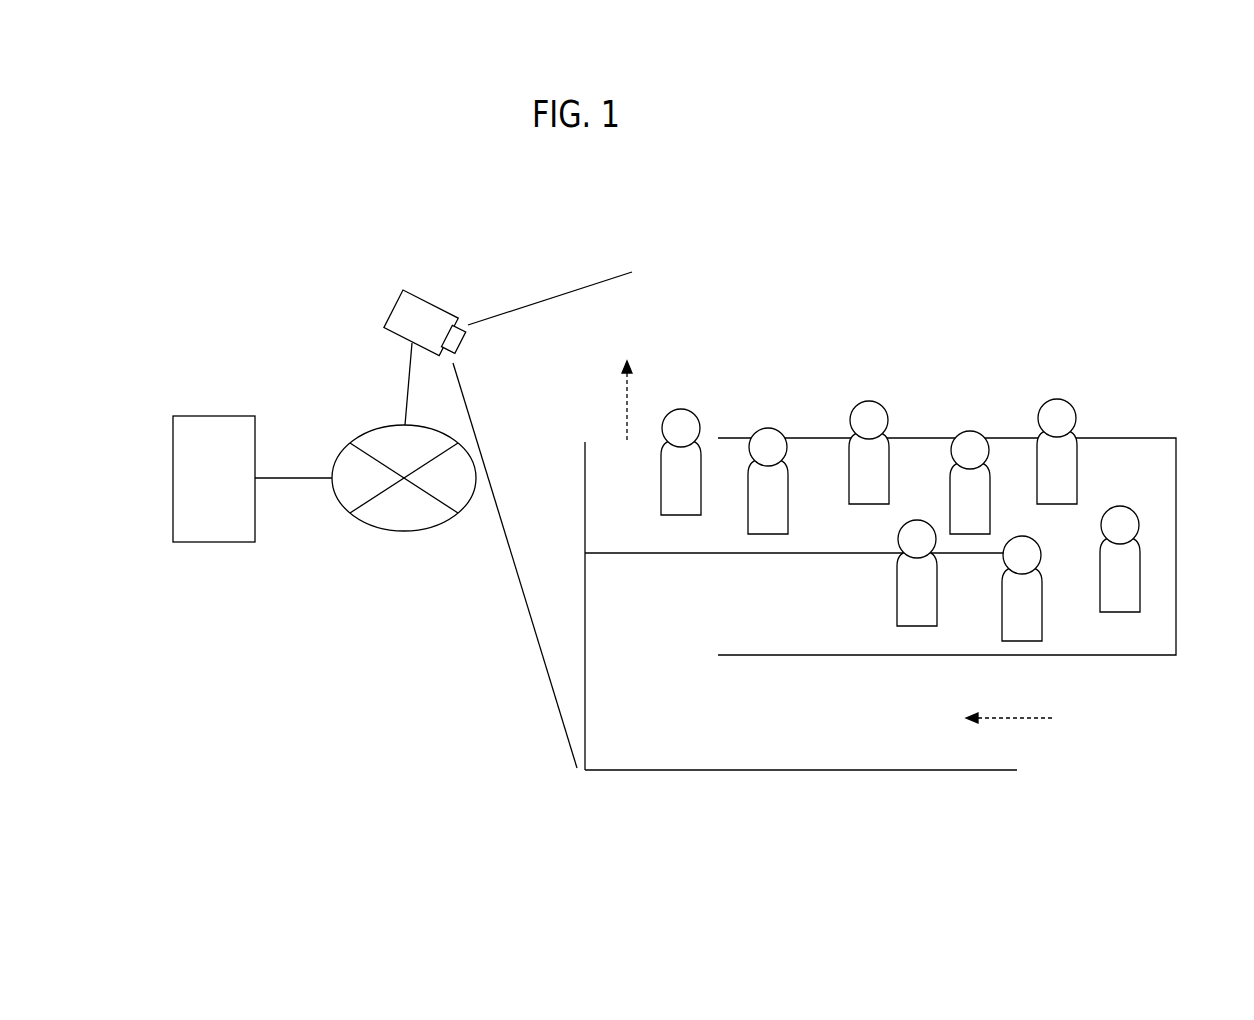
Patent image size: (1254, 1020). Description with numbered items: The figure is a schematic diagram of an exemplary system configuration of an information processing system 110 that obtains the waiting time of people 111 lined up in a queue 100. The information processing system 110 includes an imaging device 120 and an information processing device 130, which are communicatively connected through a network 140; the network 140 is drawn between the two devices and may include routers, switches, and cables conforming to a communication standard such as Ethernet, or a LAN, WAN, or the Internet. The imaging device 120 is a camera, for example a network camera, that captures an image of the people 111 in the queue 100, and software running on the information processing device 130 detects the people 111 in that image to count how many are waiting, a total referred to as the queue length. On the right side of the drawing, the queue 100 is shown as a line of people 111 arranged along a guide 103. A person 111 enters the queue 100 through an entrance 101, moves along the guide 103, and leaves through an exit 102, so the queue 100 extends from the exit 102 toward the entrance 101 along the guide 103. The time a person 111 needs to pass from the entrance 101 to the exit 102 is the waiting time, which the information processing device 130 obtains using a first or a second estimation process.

The queue 100 is at (937, 397).
The entrance 101 is at (1032, 717).
The exit 102 is at (625, 398).
The guide 103 is at (1125, 437).
The information processing system 110 is at (347, 233).
The person 111 is at (692, 410).
The imaging device 120 is at (395, 337).
The information processing device 130 is at (210, 542).
The network 140 is at (372, 528).